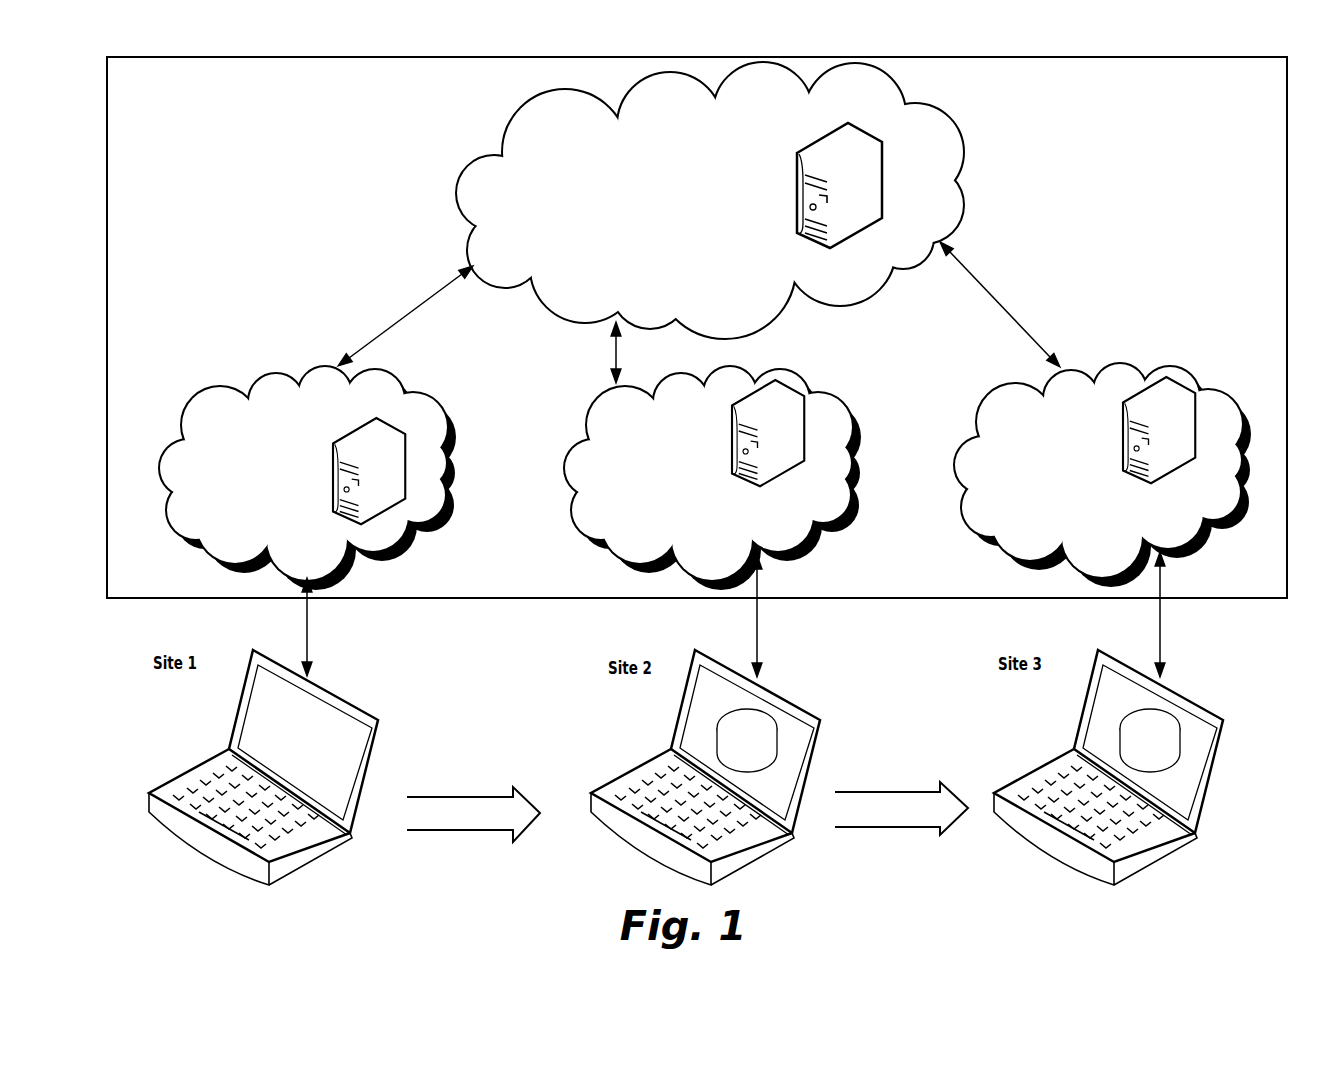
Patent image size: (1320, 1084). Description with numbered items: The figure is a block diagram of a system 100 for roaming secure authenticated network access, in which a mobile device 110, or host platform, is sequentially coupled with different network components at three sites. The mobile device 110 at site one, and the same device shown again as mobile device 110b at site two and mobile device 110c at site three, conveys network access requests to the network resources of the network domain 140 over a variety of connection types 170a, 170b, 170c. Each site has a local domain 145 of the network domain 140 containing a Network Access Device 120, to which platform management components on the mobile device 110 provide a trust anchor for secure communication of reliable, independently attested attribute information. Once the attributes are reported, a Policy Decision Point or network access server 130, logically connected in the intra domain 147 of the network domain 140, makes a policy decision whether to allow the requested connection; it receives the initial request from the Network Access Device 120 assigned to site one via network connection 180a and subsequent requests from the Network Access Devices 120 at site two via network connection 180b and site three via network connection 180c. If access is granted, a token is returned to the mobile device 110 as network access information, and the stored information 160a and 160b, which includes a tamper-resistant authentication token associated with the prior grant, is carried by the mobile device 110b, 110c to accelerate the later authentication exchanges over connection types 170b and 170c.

The network system 100 is at (304, 282).
The mobile device 110 is at (274, 745).
The client computer at site 2 110b is at (630, 766).
The client computer at site 3 110c is at (1050, 758).
The Network Access Device 120 is at (764, 450).
The network access server 130 is at (843, 204).
The network domain 140 is at (182, 121).
The local domain 145 is at (705, 477).
The intra domain 147 is at (727, 267).
The stored network access information 160a is at (775, 726).
The stored network access information 160b is at (1176, 716).
The connection type 170a is at (310, 641).
The connection type 170b is at (760, 642).
The connection type 170c is at (1163, 630).
The network connection 180a is at (403, 313).
The network connection 180b is at (612, 362).
The network connection 180c is at (998, 292).